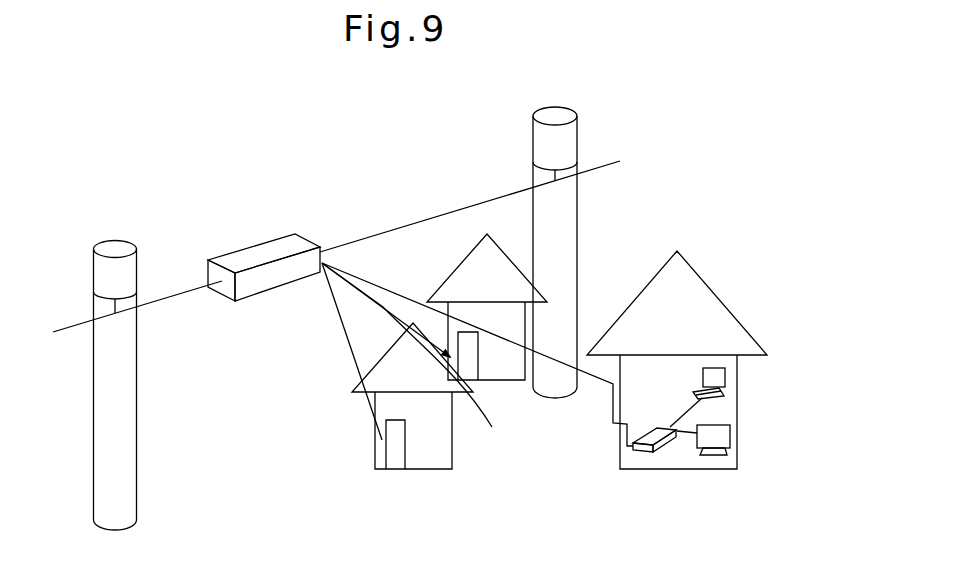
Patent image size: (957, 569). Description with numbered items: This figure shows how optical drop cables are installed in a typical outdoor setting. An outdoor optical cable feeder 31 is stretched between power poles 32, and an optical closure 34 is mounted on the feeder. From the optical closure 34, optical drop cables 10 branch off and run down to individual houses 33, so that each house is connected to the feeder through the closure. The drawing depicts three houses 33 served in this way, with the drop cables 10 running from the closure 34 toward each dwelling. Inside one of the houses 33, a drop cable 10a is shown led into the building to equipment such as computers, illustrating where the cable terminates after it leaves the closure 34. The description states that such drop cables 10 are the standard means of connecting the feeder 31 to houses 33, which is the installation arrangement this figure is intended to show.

The optical drop cable 10 is at (513, 347).
The power line communication device (modem) in house 10a is at (627, 440).
The outdoor optical cable feeder 31 is at (388, 228).
The utility pole 32 is at (108, 440).
The house 33 is at (432, 452).
The optical closure 34 is at (243, 255).